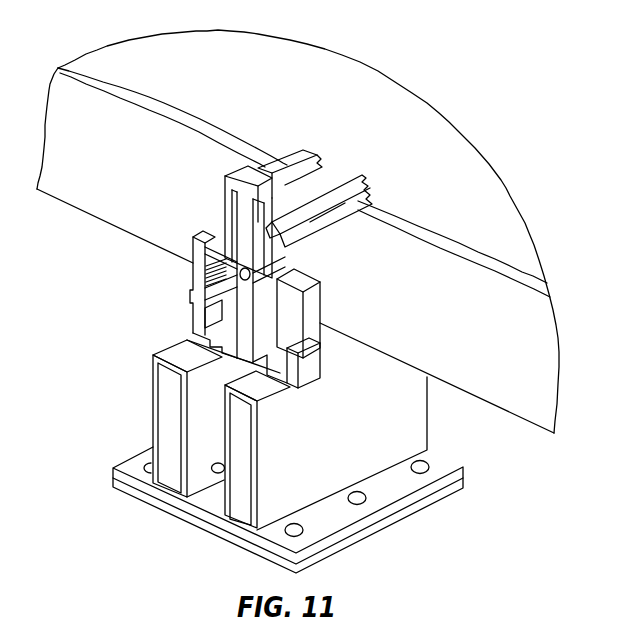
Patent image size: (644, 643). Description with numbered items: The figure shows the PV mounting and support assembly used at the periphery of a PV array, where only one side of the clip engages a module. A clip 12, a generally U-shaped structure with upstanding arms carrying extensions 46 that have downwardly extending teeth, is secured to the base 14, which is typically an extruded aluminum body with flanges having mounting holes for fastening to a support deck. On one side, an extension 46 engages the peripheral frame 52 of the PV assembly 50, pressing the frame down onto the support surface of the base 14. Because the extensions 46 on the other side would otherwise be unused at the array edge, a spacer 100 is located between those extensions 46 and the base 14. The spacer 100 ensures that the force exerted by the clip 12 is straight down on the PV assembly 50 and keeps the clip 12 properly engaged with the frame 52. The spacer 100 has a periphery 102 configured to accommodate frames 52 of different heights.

The clip 12 is at (369, 175).
The base 14 is at (141, 403).
The extensions 46 is at (379, 184).
The PV assembly 50 is at (528, 203).
The peripheral frame 52 is at (527, 390).
The spacer 100 is at (189, 280).
The periphery 102 is at (308, 307).